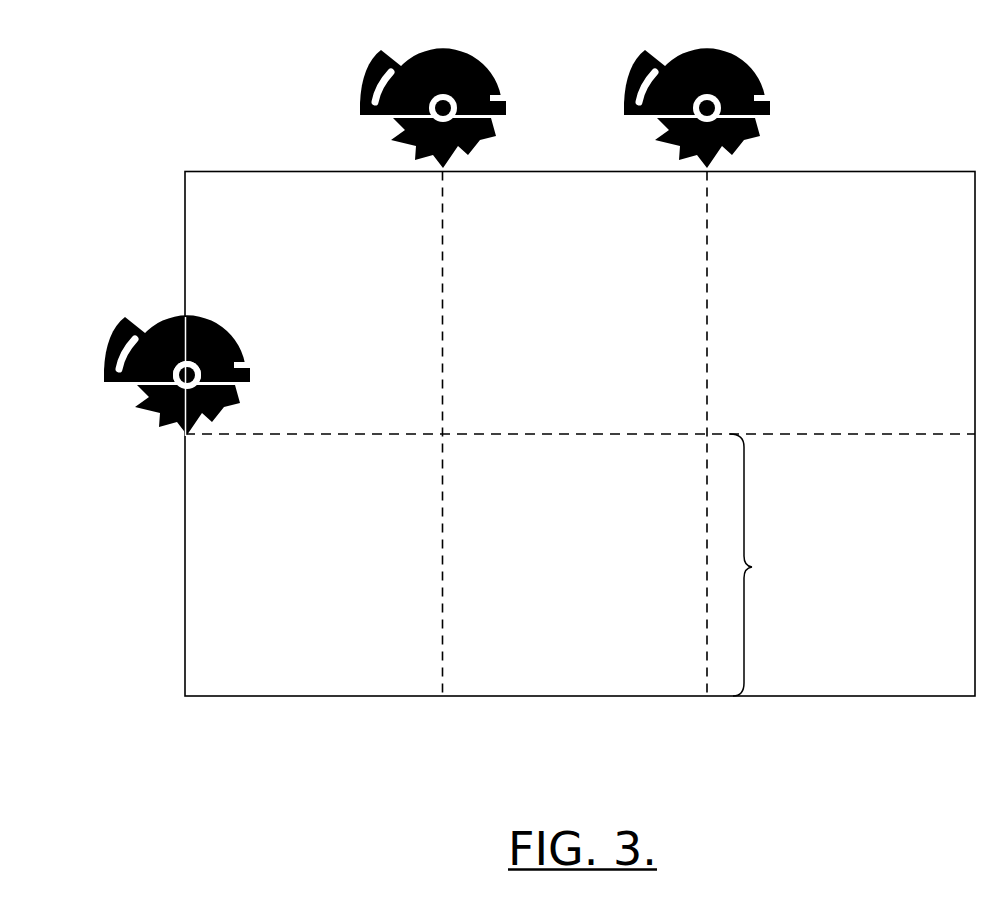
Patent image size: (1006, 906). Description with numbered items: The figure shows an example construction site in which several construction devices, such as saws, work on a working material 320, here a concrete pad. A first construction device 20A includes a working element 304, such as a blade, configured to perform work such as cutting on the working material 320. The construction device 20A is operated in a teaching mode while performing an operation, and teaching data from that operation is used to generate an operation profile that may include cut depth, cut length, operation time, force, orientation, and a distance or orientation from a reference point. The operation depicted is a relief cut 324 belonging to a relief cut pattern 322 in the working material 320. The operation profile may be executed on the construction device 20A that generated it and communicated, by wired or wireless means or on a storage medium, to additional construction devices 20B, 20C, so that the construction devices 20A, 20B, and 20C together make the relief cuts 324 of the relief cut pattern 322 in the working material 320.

The construction device 20A is at (162, 320).
The additional construction device 20B is at (457, 48).
The additional construction device 20C is at (716, 50).
The working element 304 is at (160, 410).
The working material 320 is at (580, 696).
The relief cut pattern 322 is at (442, 510).
The relief cut 324 is at (764, 565).